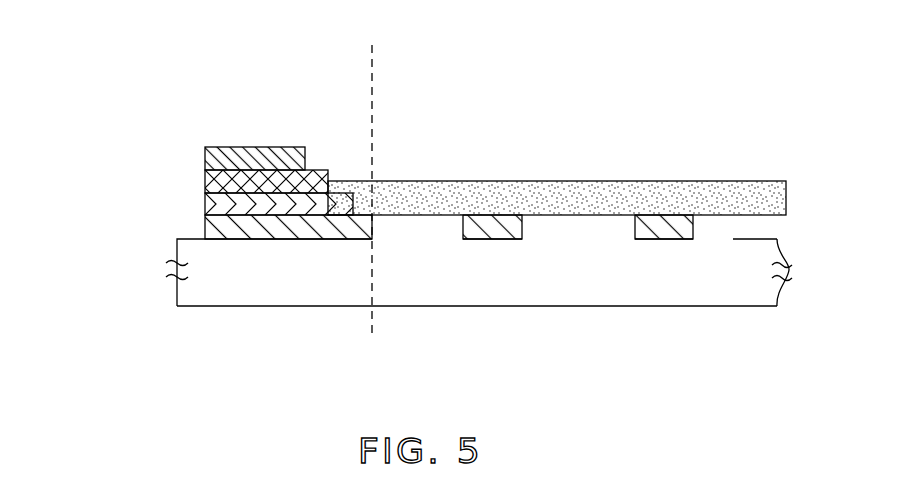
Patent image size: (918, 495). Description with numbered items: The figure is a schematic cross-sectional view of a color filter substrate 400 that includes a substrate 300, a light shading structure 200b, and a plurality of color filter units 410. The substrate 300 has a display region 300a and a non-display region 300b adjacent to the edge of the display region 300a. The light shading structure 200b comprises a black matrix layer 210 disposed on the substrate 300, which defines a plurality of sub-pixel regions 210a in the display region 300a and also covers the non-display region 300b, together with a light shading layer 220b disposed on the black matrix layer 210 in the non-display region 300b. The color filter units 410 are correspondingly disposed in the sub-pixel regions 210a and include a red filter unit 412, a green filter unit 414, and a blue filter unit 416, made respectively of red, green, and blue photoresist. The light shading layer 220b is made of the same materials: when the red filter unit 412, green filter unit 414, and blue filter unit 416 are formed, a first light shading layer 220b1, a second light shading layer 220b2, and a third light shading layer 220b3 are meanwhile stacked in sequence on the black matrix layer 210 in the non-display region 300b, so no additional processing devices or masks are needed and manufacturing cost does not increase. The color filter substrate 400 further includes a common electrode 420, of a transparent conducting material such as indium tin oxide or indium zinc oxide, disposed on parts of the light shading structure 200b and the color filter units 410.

The light shading structure 200b is at (188, 143).
The black matrix layer 210 is at (215, 223).
The sub-pixel regions 210a is at (737, 208).
The light shading layer 220b is at (188, 171).
The first light shading layer 220b1 is at (218, 207).
The second light shading layer 220b2 is at (218, 183).
The third light shading layer 220b3 is at (215, 157).
The substrate 300 is at (188, 296).
The display region 300a is at (780, 70).
The non-display region 300b is at (363, 70).
The color filter substrate 400 is at (777, 384).
The color filter units 410 is at (569, 318).
The red filter unit 412 is at (414, 228).
The green filter unit 414 is at (584, 228).
The blue filter unit 416 is at (711, 291).
The common electrode 420 is at (783, 206).